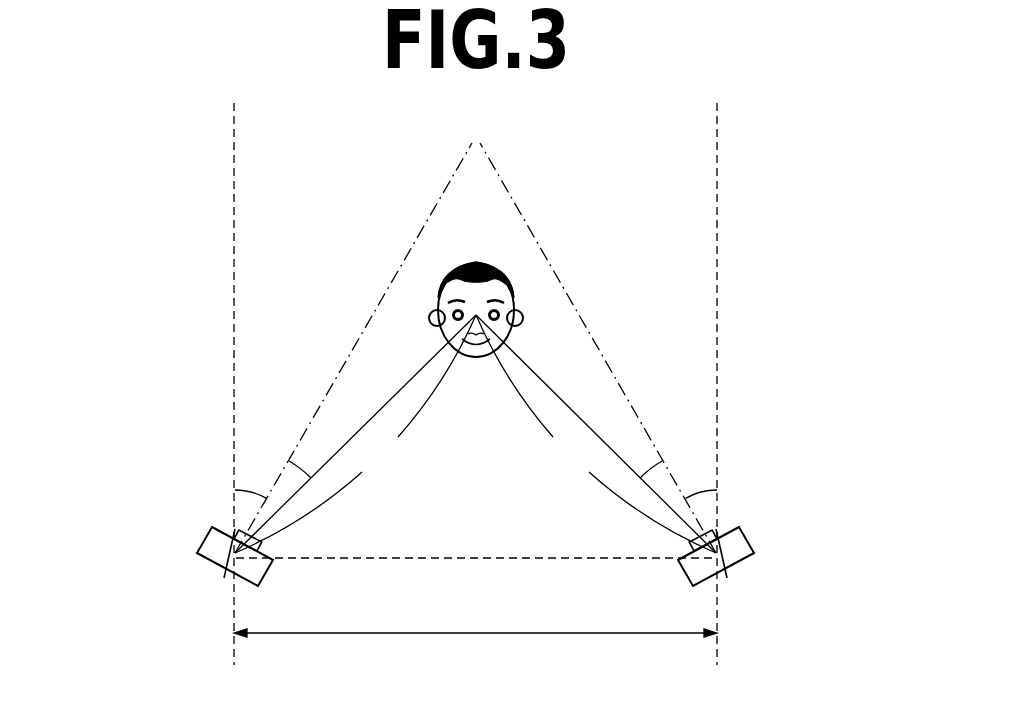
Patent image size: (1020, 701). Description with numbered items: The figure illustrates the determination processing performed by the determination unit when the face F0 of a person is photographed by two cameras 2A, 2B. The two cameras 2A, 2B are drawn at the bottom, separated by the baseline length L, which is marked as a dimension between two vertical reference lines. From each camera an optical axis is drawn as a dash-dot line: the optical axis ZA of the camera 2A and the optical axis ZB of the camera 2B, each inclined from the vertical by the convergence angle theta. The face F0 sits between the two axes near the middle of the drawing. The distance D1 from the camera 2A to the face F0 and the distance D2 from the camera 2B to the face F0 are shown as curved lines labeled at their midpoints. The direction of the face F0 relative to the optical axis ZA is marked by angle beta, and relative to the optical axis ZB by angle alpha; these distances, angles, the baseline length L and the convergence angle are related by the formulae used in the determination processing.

The camera 2A is at (204, 540).
The camera 2B is at (747, 537).
The face F0 is at (493, 262).
The optical axis ZA is at (446, 190).
The optical axis ZB is at (506, 190).
The distance D1 is at (355, 434).
The distance D2 is at (596, 434).
The baseline length L is at (475, 619).